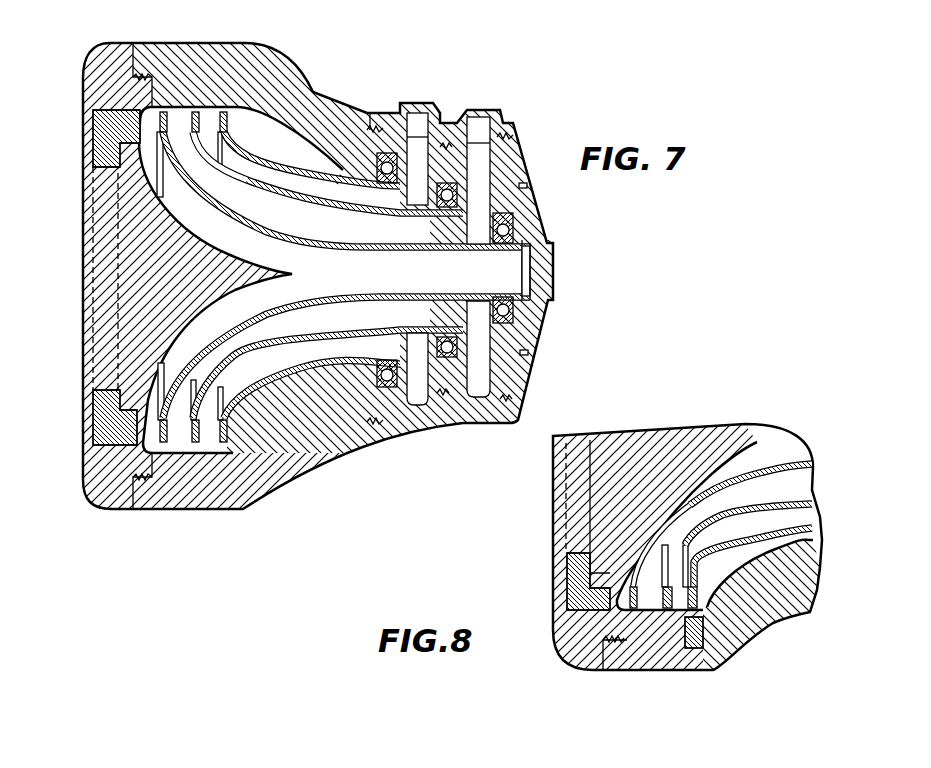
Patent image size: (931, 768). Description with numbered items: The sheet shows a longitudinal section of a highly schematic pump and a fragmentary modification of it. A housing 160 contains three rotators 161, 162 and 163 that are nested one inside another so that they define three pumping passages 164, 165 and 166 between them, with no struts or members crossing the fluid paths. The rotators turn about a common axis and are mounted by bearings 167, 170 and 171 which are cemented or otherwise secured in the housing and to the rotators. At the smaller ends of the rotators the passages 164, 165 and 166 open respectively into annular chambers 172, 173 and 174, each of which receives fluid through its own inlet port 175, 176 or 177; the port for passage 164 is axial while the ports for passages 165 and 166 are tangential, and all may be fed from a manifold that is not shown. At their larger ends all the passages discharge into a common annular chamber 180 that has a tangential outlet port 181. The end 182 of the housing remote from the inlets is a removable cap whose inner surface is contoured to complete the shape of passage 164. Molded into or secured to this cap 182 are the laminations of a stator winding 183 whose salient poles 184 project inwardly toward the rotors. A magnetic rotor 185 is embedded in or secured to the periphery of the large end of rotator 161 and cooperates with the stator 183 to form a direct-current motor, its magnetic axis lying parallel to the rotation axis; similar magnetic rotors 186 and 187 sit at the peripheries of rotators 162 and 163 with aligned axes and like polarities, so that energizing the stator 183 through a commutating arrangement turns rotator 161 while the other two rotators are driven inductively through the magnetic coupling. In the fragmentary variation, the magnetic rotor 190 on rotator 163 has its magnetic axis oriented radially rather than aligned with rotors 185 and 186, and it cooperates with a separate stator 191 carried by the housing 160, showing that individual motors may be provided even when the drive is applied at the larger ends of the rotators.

In FIG. 7, the housing 160 is at (128, 515).
In FIG. 8, the housing 160 is at (557, 657).
In FIG. 7, the rotator 161 is at (428, 243).
In FIG. 7, the rotator 162 is at (346, 210).
In FIG. 7, the rotator 163 is at (333, 181).
In FIG. 7, the pumping passage 164 is at (348, 282).
In FIG. 7, the pumping passage 165 is at (450, 238).
In FIG. 7, the pumping passage 166 is at (308, 360).
In FIG. 7, the bearing 167 is at (510, 318).
In FIG. 7, the bearing 170 is at (448, 333).
In FIG. 7, the bearing 171 is at (388, 362).
In FIG. 7, the annular chamber 172 is at (520, 270).
In FIG. 7, the annular chamber 173 is at (479, 395).
In FIG. 7, the annular chamber 174 is at (417, 405).
In FIG. 7, the inlet port 175 is at (550, 283).
In FIG. 7, the inlet port 176 is at (480, 123).
In FIG. 7, the inlet port 177 is at (417, 121).
In FIG. 7, the annular chamber 180 is at (233, 117).
In FIG. 8, the annular chamber 180 is at (713, 597).
In FIG. 7, the tangential outlet port 181 is at (207, 117).
In FIG. 7, the removable cap 182 is at (83, 295).
In FIG. 8, the removable cap 182 is at (553, 503).
In FIG. 7, the stator winding 183 is at (100, 408).
In FIG. 8, the stator winding 183 is at (577, 563).
In FIG. 7, the salient poles 184 is at (127, 430).
In FIG. 8, the salient poles 184 is at (607, 590).
In FIG. 7, the magnetic rotor 185 is at (163, 445).
In FIG. 8, the magnetic rotor 185 is at (633, 607).
In FIG. 7, the magnetic rotor 186 is at (193, 450).
In FIG. 8, the magnetic rotor 186 is at (667, 607).
In FIG. 7, the magnetic rotor 187 is at (221, 452).
In FIG. 8, the magnetic rotor 190 is at (672, 618).
In FIG. 8, the separate stator 191 is at (700, 650).